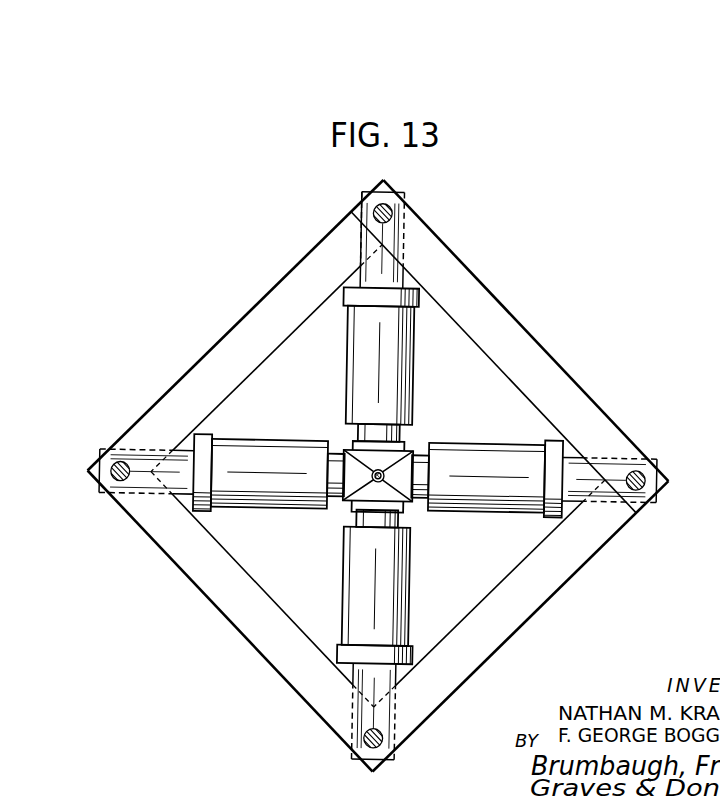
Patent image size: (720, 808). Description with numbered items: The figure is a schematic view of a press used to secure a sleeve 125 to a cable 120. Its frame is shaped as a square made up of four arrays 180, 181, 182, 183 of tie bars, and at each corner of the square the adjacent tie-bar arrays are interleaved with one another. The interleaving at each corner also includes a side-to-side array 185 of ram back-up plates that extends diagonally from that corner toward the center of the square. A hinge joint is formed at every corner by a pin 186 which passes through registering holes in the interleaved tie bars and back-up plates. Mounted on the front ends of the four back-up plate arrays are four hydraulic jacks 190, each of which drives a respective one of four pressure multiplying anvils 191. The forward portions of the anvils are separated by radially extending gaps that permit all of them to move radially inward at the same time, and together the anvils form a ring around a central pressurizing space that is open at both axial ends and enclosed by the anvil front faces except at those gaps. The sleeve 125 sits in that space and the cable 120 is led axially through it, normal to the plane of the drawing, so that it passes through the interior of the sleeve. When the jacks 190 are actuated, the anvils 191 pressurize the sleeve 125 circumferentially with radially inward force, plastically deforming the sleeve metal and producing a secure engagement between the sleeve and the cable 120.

The cable 120 is at (391, 475).
The sleeve 125 is at (367, 473).
The array of tie bars 180 is at (242, 323).
The array of tie bars 181 is at (493, 307).
The array of tie bars 182 is at (552, 590).
The array of tie bars 183 is at (212, 593).
The array of ram back-up plates 185 is at (373, 270).
The pin 186 is at (391, 211).
The hydraulic jack 190 is at (407, 387).
The pressure multiplying anvil 191 is at (373, 452).